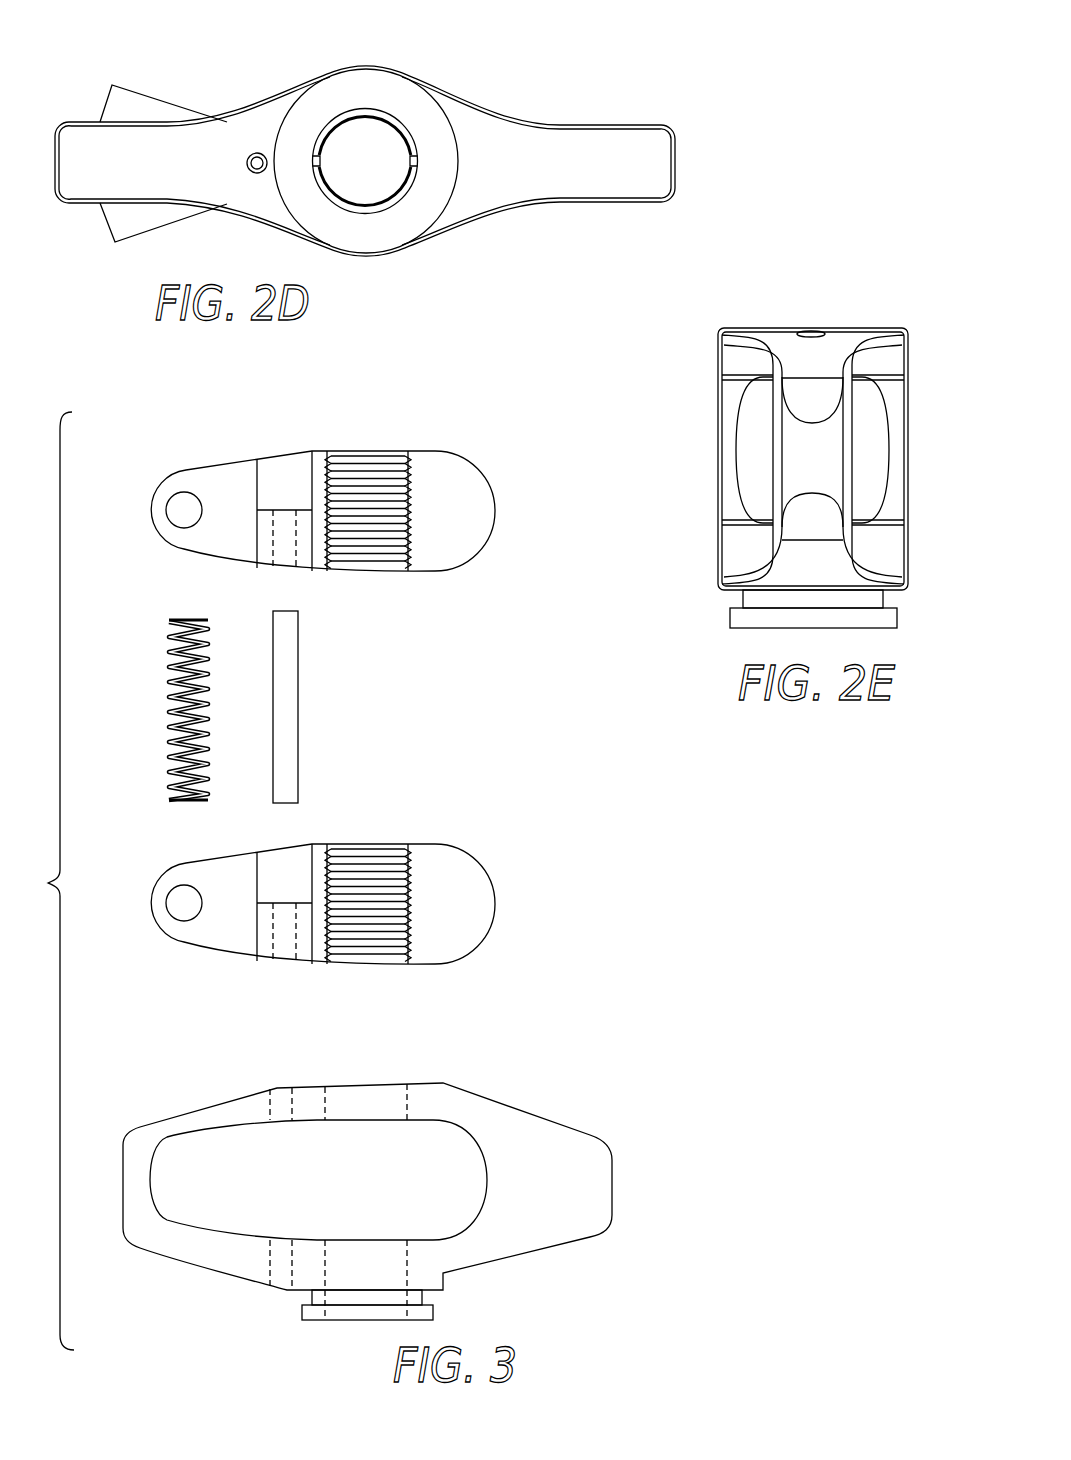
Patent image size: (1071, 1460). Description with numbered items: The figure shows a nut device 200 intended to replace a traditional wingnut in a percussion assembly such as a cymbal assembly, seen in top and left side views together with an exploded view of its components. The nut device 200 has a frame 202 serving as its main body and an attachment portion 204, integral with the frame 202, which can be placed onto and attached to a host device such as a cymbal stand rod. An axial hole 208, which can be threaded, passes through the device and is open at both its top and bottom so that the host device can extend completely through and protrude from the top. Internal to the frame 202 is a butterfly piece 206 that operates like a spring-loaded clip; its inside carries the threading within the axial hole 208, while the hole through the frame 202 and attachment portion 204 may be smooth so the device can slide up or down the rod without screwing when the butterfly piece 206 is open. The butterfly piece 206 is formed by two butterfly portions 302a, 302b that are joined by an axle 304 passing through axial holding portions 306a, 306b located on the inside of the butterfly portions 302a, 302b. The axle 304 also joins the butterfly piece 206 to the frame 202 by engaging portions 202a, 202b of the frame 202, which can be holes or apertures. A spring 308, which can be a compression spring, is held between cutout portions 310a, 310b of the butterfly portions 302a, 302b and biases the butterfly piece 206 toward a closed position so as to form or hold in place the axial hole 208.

In FIG. 2D, the nut device 200 is at (377, 134).
In FIG. 2E, the nut device 200 is at (783, 441).
In FIG. 2D, the frame 202 is at (625, 120).
In FIG. 2E, the frame 202 is at (720, 328).
In FIG. 3, the frame 202 is at (373, 1180).
In FIG. 3, the portion of the frame 202a is at (280, 1094).
In FIG. 3, the portion of the frame 202b is at (282, 1280).
In FIG. 2E, the attachment portion 204 is at (730, 615).
In FIG. 2D, the butterfly piece 206 is at (140, 213).
In FIG. 2E, the butterfly piece 206 is at (868, 477).
In FIG. 2D, the axial hole 208 is at (358, 134).
In FIG. 3, the butterfly portion 302a is at (321, 899).
In FIG. 3, the butterfly portion 302b is at (321, 523).
In FIG. 3, the axle 304 is at (298, 733).
In FIG. 3, the axial holding portion 306a is at (262, 942).
In FIG. 3, the axial holding portion 306b is at (262, 543).
In FIG. 3, the spring 308 is at (168, 665).
In FIG. 3, the cutout portion 310a is at (181, 895).
In FIG. 3, the cutout portion 310b is at (181, 500).